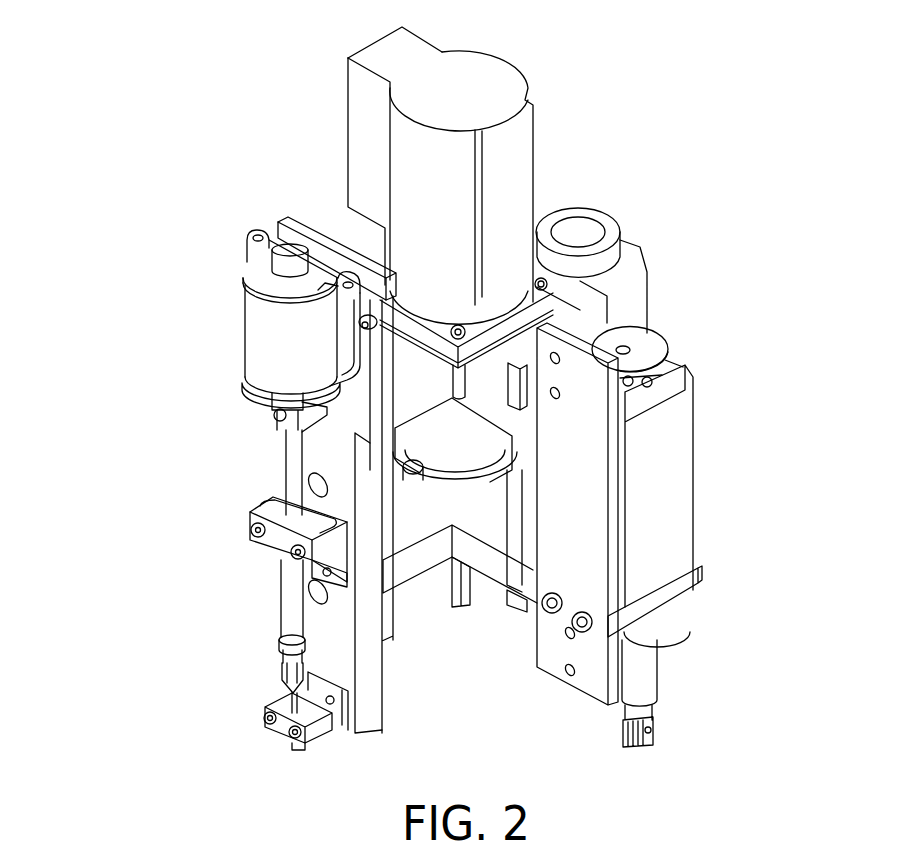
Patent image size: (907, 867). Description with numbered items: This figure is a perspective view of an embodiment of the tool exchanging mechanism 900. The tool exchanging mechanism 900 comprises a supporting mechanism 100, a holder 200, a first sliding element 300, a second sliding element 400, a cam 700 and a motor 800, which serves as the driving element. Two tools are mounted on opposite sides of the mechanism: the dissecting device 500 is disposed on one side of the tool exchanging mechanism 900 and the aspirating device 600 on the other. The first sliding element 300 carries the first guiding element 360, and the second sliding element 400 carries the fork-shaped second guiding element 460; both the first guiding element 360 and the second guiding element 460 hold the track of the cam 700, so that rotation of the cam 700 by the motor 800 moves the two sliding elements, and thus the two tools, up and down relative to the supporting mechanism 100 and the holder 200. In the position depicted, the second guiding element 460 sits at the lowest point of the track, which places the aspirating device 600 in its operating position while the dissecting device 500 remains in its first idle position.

The tool exchanging mechanism 900 is at (765, 87).
The motor 800 is at (515, 157).
The supporting mechanism 100 is at (485, 368).
The aspirating device 600 is at (263, 335).
The second sliding element 400 is at (390, 484).
The second guiding element 460 is at (407, 477).
The cam 700 is at (465, 443).
The holder 200 is at (488, 422).
The first sliding element 300 is at (512, 385).
The dissecting device 500 is at (667, 505).
The first guiding element 360 is at (497, 474).